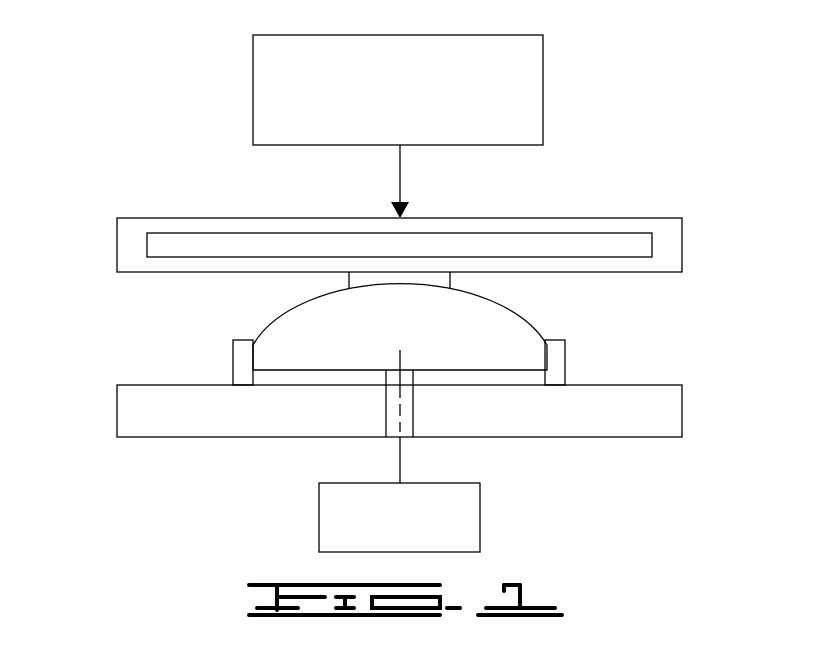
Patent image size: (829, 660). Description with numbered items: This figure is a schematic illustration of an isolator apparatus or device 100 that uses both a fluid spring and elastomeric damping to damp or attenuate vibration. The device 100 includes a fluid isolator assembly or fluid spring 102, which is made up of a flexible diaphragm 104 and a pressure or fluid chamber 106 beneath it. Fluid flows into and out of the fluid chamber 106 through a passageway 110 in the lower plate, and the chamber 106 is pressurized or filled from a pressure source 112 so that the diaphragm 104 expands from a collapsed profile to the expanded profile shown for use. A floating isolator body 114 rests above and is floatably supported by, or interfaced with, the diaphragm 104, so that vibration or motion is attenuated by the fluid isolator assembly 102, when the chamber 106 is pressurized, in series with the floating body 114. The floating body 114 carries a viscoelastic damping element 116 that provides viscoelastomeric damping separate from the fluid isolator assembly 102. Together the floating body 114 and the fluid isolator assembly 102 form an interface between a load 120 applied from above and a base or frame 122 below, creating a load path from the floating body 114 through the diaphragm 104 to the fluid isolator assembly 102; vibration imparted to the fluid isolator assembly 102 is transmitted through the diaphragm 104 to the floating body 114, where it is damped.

The isolator apparatus or device 100 is at (168, 66).
The fluid isolator assembly or fluid spring 102 is at (553, 308).
The flexible diaphragm 104 is at (280, 313).
The pressure or fluid chamber 106 is at (413, 343).
The passageway 110 is at (413, 412).
The pressure source 112 is at (319, 522).
The floating isolator body 114 is at (658, 218).
The viscoelastic damping element 116 is at (207, 233).
The load 120 is at (543, 85).
The base or frame 122 is at (155, 385).